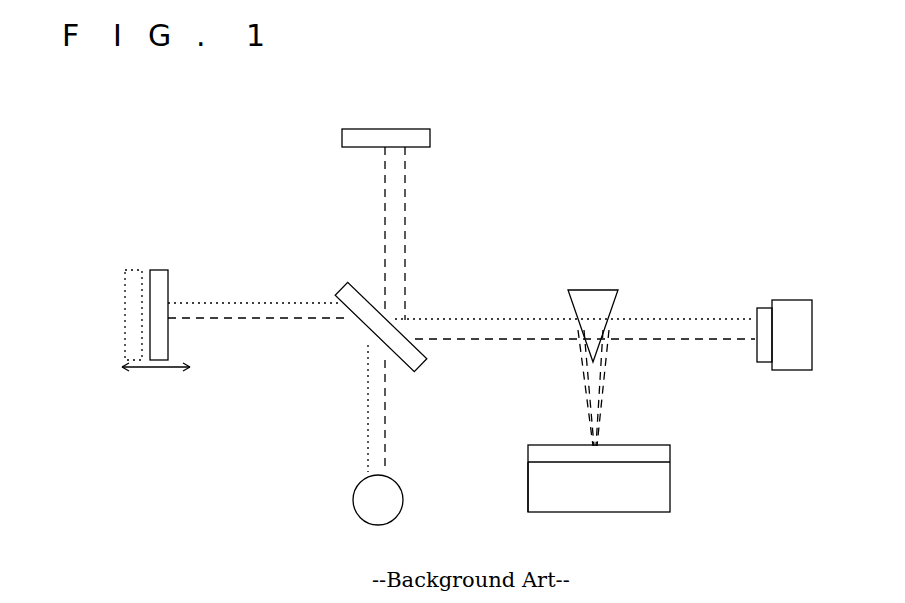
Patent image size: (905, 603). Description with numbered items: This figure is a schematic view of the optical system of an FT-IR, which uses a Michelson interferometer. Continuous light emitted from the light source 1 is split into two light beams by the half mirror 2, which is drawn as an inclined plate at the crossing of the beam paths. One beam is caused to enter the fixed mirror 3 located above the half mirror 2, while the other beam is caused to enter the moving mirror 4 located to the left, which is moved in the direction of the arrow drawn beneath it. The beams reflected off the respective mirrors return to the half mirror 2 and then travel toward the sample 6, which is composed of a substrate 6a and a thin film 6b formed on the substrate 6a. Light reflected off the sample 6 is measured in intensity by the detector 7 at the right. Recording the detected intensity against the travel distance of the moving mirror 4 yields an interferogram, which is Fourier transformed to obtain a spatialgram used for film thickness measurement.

The light source 1 is at (396, 482).
The half mirror 2 is at (425, 362).
The fixed mirror 3 is at (432, 140).
The moving mirror 4 is at (170, 287).
The sample 6 is at (599, 474).
The substrate 6a is at (655, 490).
The thin film 6b is at (655, 455).
The detector 7 is at (800, 337).